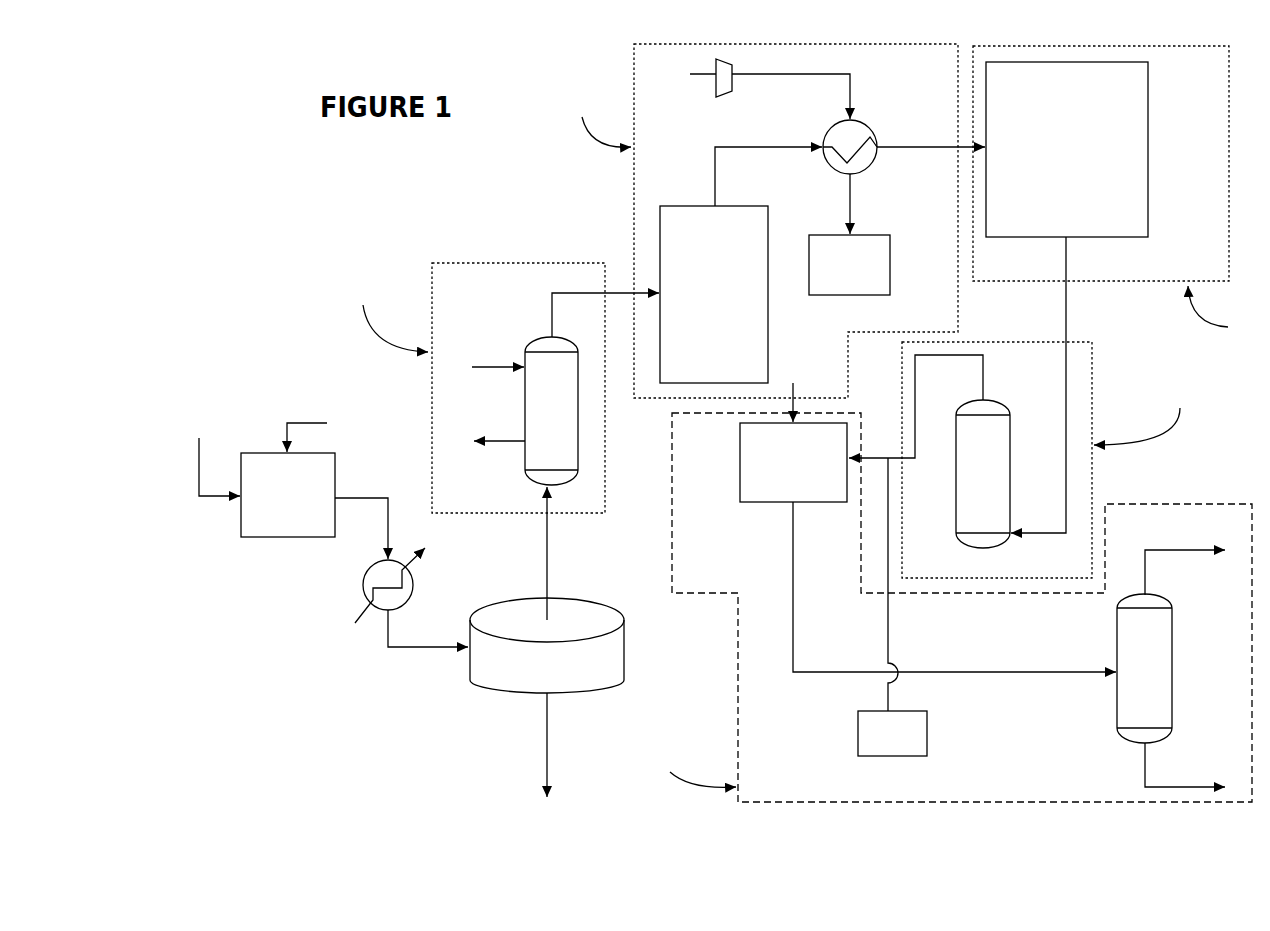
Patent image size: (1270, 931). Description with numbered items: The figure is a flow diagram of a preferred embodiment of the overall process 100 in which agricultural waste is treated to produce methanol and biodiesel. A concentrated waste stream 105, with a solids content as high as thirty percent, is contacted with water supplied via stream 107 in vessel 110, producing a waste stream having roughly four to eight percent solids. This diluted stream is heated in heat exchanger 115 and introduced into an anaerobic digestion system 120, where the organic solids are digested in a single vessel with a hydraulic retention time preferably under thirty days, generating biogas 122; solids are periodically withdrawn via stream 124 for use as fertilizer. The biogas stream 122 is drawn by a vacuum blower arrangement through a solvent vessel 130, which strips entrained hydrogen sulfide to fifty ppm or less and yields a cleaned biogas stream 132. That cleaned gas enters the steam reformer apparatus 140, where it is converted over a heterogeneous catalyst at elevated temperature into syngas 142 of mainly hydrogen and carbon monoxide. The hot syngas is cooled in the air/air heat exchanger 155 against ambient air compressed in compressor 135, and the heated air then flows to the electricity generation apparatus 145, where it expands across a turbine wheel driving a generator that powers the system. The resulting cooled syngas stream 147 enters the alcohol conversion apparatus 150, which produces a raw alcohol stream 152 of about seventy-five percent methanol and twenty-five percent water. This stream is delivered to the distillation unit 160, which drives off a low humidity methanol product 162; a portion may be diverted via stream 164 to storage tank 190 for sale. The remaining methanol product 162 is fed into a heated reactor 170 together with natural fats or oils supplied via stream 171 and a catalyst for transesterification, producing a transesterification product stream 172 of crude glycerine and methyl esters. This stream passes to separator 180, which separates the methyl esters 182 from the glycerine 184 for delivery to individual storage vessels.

The hydrogen production system 100 is at (367, 208).
The concentrated waste stream 105 is at (228, 500).
The water stream 107 is at (302, 420).
The vessel 110 is at (266, 450).
The heat exchanger 115 is at (362, 570).
The anaerobic digestion system 120 is at (626, 650).
The biogas stream 122 is at (550, 570).
The solids stream 124 is at (545, 770).
The solvent vessel 130 is at (552, 378).
The cleaned biogas stream 132 is at (580, 291).
The compressor 135 is at (724, 99).
The steam reformer apparatus 140 is at (685, 248).
The syngas 142 is at (712, 148).
The electricity generation apparatus 145 is at (870, 250).
The cooled syngas stream 147 is at (958, 150).
The alcohol conversion apparatus 150 is at (1098, 148).
The raw alcohol stream 152 is at (1067, 370).
The air/air heat exchanger 155 is at (863, 118).
The distillation unit 160 is at (978, 489).
The methanol product 162 is at (913, 400).
The diverted product stream 164 is at (890, 576).
The heated reactor 170 is at (757, 458).
The fats or oils stream 171 is at (790, 398).
The transesterification product stream 172 is at (912, 668).
The separator 180 is at (1128, 645).
The methyl esters 182 is at (1208, 546).
The glycerine 184 is at (1143, 772).
The storage tank 190 is at (856, 727).